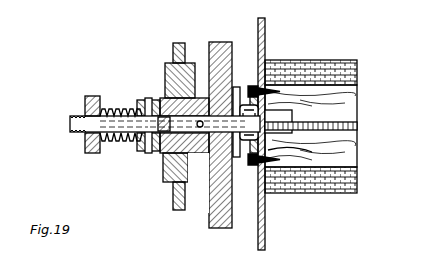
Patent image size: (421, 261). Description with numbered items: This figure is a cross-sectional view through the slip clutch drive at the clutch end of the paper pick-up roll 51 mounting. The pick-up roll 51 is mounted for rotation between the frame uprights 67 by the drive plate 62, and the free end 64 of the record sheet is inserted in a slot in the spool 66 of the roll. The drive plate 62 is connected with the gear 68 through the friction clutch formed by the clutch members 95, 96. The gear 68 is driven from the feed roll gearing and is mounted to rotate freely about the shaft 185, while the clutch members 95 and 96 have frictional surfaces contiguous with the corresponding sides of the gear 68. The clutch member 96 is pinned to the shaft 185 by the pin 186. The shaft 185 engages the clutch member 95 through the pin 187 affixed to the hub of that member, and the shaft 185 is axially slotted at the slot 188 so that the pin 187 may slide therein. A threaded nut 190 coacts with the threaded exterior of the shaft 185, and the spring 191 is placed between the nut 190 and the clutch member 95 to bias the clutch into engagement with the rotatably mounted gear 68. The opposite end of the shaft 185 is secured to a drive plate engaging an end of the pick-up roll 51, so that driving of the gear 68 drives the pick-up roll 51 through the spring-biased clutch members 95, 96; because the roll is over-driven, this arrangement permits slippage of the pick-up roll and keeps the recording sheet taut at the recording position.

The pick-up roll 51 is at (327, 60).
The drive plate 62 is at (243, 158).
The free end of the record sheet 64 is at (355, 127).
The spool 66 is at (342, 153).
The frame upright 67 is at (214, 228).
The gear 68 is at (172, 197).
The clutch member 95 is at (164, 152).
The clutch member 96 is at (190, 160).
The shaft 185 is at (70, 124).
The pin 186 is at (200, 121).
The pin 187 is at (147, 98).
The axial slot 188 is at (128, 128).
The threaded nut 190 is at (88, 96).
The spring 191 is at (113, 109).